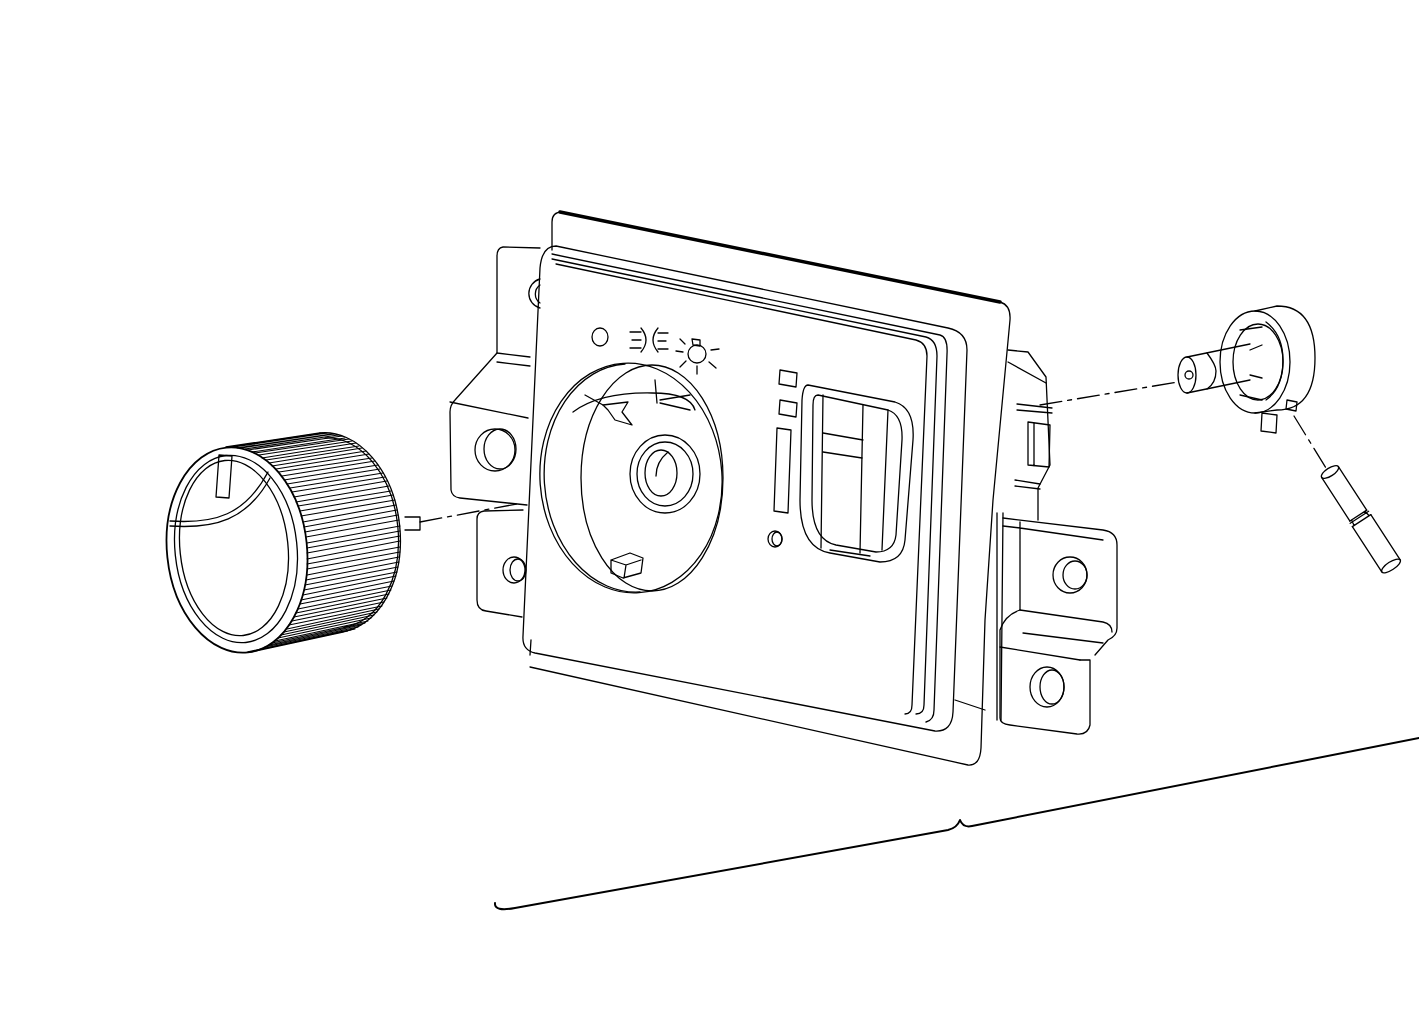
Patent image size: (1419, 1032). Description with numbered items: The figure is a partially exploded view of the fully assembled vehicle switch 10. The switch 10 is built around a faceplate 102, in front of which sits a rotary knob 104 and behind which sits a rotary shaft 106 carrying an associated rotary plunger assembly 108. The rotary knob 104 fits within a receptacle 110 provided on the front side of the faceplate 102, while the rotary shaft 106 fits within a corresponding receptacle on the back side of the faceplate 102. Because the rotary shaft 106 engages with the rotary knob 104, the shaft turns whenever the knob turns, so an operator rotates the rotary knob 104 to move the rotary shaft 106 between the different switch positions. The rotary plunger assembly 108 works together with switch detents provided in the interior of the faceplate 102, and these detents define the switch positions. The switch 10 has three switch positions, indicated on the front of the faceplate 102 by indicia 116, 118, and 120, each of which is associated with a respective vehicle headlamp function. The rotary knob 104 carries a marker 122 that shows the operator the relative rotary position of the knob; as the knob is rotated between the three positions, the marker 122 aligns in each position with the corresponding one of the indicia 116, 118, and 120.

The vehicle switch 10 is at (940, 122).
The faceplate 102 is at (677, 703).
The rotary knob 104 is at (280, 437).
The rotary shaft 106 is at (1225, 325).
The rotary plunger assembly 108 is at (1355, 545).
The receptacle 110 is at (683, 562).
The indicia 116 is at (600, 326).
The indicia 118 is at (648, 325).
The indicia 120 is at (703, 338).
The marker 122 is at (220, 455).